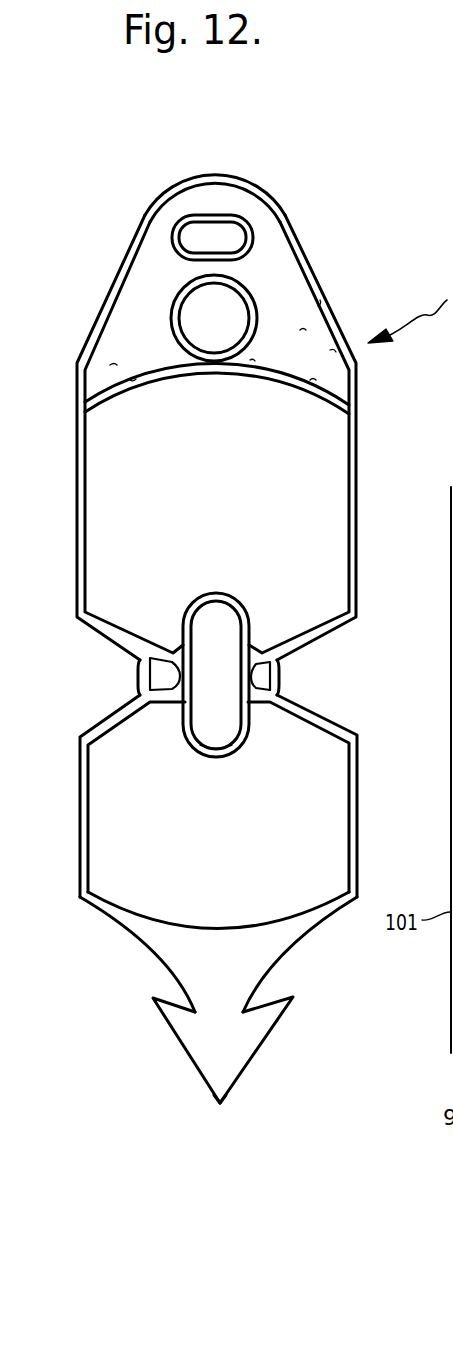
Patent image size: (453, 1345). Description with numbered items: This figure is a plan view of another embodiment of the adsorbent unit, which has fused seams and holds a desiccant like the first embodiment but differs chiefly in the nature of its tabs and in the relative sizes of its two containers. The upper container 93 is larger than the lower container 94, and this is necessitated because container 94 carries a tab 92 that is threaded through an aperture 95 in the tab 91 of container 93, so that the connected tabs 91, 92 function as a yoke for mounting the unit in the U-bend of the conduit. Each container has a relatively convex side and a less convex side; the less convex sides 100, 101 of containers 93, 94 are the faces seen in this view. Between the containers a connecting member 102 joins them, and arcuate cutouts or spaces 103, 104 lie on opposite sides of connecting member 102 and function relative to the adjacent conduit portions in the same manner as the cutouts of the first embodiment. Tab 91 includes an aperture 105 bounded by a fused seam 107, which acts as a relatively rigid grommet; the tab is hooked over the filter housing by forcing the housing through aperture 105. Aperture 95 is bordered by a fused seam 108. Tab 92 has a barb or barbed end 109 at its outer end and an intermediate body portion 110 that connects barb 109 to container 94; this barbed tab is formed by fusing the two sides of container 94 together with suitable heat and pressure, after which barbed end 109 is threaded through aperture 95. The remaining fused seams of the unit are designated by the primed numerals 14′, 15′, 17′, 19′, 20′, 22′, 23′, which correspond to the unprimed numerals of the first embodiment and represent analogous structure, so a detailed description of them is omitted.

The tab 91 is at (211, 172).
The tab 92 is at (220, 1104).
The container 93 is at (357, 430).
The container 94 is at (357, 793).
The aperture 95 is at (232, 238).
The side 100 is at (237, 495).
The side 101 is at (232, 845).
The connecting member 102 is at (212, 718).
The arcuate cutout 103 is at (287, 678).
The arcuate cutout 104 is at (133, 678).
The aperture 105 is at (238, 300).
The fused seam 107 is at (182, 292).
The fused seam 108 is at (175, 228).
The barbed end 109 is at (188, 1062).
The intermediate body portion 110 is at (210, 960).
The fused seam 14′ is at (357, 510).
The fused seam 15′ is at (288, 375).
The fused seam 17′ is at (77, 507).
The fused seam 19′ is at (215, 593).
The fused seam 20′ is at (357, 820).
The fused seam 22′ is at (80, 825).
The fused seam 23′ is at (213, 758).